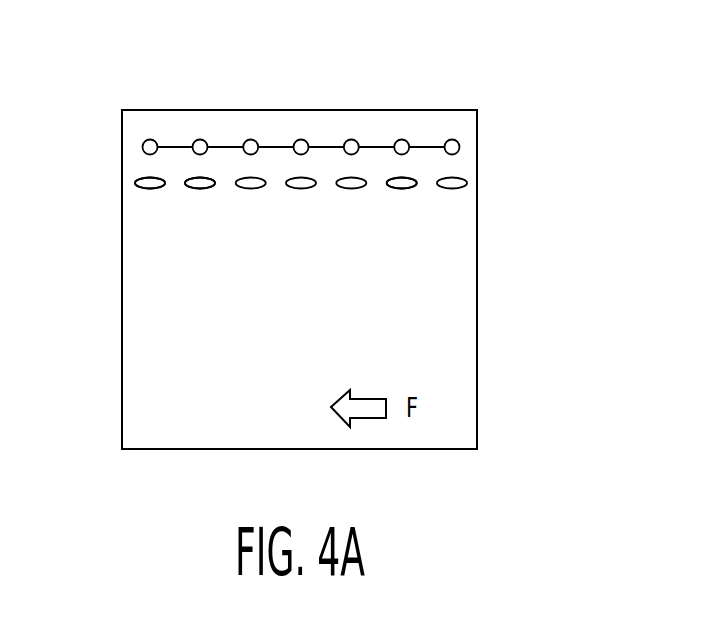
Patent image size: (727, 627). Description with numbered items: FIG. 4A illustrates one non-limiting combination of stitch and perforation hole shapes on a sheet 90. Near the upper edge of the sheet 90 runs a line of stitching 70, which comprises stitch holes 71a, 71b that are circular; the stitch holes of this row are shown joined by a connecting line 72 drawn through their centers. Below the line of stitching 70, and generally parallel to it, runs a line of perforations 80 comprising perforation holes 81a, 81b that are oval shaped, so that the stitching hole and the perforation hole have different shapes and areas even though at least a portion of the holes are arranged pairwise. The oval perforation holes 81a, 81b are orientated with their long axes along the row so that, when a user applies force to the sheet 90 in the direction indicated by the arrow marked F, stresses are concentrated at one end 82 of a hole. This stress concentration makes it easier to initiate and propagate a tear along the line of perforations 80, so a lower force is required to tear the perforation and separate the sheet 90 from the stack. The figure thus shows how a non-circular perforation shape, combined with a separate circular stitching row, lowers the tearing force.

The line of stitching 70 is at (489, 138).
The stitch hole 71a is at (149, 139).
The stitch hole 71b is at (200, 139).
The connecting line 72 is at (283, 143).
The line of perforations 80 is at (490, 186).
The perforation hole 81a is at (143, 189).
The perforation hole 81b is at (197, 189).
The end 82 is at (424, 198).
The sheet 90 is at (263, 366).